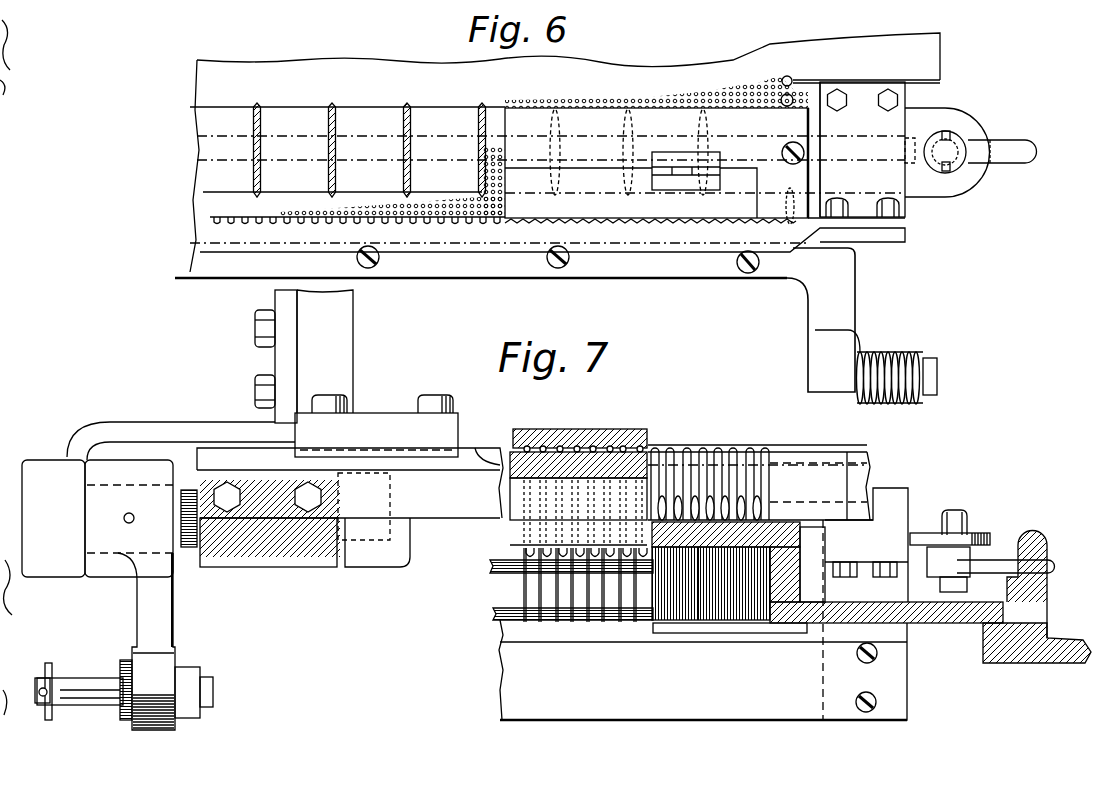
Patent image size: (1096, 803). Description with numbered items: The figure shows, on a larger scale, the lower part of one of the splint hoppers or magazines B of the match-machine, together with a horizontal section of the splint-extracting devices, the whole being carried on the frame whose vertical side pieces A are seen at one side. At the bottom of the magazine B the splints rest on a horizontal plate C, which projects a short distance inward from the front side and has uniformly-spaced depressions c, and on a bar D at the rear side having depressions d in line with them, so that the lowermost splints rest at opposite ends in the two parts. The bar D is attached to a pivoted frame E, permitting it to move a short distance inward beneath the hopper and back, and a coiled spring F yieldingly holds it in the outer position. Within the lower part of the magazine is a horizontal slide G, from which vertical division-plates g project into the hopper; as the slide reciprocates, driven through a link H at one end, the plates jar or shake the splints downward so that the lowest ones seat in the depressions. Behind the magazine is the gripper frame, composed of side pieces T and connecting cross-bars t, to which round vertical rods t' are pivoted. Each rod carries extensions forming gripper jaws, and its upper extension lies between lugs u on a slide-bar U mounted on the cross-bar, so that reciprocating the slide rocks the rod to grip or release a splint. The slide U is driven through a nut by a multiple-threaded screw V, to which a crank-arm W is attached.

In FIG. 6, the horizontal slide G is at (960, 115).
In FIG. 7, the horizontal slide G is at (920, 533).
In FIG. 6, the vertical division-plates g is at (250, 152).
In FIG. 6, the splint magazine or hopper B is at (692, 146).
In FIG. 7, the splint magazine or hopper B is at (770, 582).
In FIG. 6, the link H is at (1013, 140).
In FIG. 6, the depressions d is at (197, 226).
In FIG. 7, the depressions d is at (481, 590).
In FIG. 6, the bar D is at (552, 250).
In FIG. 7, the bar D is at (559, 558).
In FIG. 6, the depressions c is at (615, 225).
In FIG. 7, the depressions c is at (497, 627).
In FIG. 6, the horizontal plate C is at (648, 252).
In FIG. 7, the horizontal plate C is at (703, 670).
In FIG. 6, the pivoted frame E is at (820, 308).
In FIG. 6, the coiled spring F is at (892, 352).
In FIG. 7, the side pieces T is at (356, 373).
In FIG. 7, the slide-bar U is at (828, 445).
In FIG. 7, the multiple-threaded screw V is at (236, 550).
In FIG. 7, the nut block n' is at (305, 538).
In FIG. 7, the crank-arm W is at (150, 626).
In FIG. 7, the cross-bars t is at (580, 427).
In FIG. 7, the round vertical rods t' is at (613, 438).
In FIG. 7, the lugs u is at (812, 497).
In FIG. 7, the vertical side pieces A is at (1015, 598).